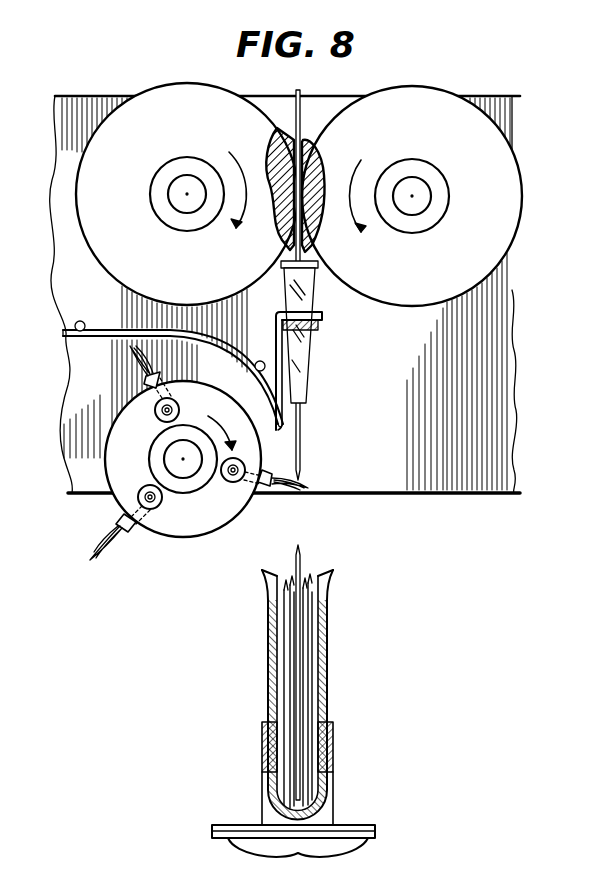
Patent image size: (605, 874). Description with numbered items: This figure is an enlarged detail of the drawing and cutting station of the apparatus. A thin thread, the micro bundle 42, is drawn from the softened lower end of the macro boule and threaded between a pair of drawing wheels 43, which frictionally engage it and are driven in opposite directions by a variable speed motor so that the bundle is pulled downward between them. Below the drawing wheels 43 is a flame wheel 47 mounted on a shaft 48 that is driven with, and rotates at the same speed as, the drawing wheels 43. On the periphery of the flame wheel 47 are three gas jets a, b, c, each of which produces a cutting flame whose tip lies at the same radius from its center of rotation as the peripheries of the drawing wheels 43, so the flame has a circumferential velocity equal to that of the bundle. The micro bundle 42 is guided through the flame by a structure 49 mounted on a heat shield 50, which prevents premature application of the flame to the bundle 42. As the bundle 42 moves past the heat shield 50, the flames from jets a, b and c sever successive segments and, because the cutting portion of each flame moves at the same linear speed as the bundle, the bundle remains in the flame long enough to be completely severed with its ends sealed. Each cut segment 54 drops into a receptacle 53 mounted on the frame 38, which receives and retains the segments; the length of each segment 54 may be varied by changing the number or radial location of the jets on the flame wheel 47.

The drawing wheels 43 is at (165, 105).
The micro bundle 42 is at (303, 102).
The guide structure 49 is at (308, 360).
The heat shield 50 is at (82, 337).
The flame wheel 47 is at (170, 524).
The shaft 48 is at (183, 464).
The gas jet a is at (124, 518).
The gas jet b is at (140, 378).
The gas jet c is at (266, 476).
The receptacle 53 is at (268, 628).
The segment 54 is at (296, 562).
The frame 38 is at (236, 825).